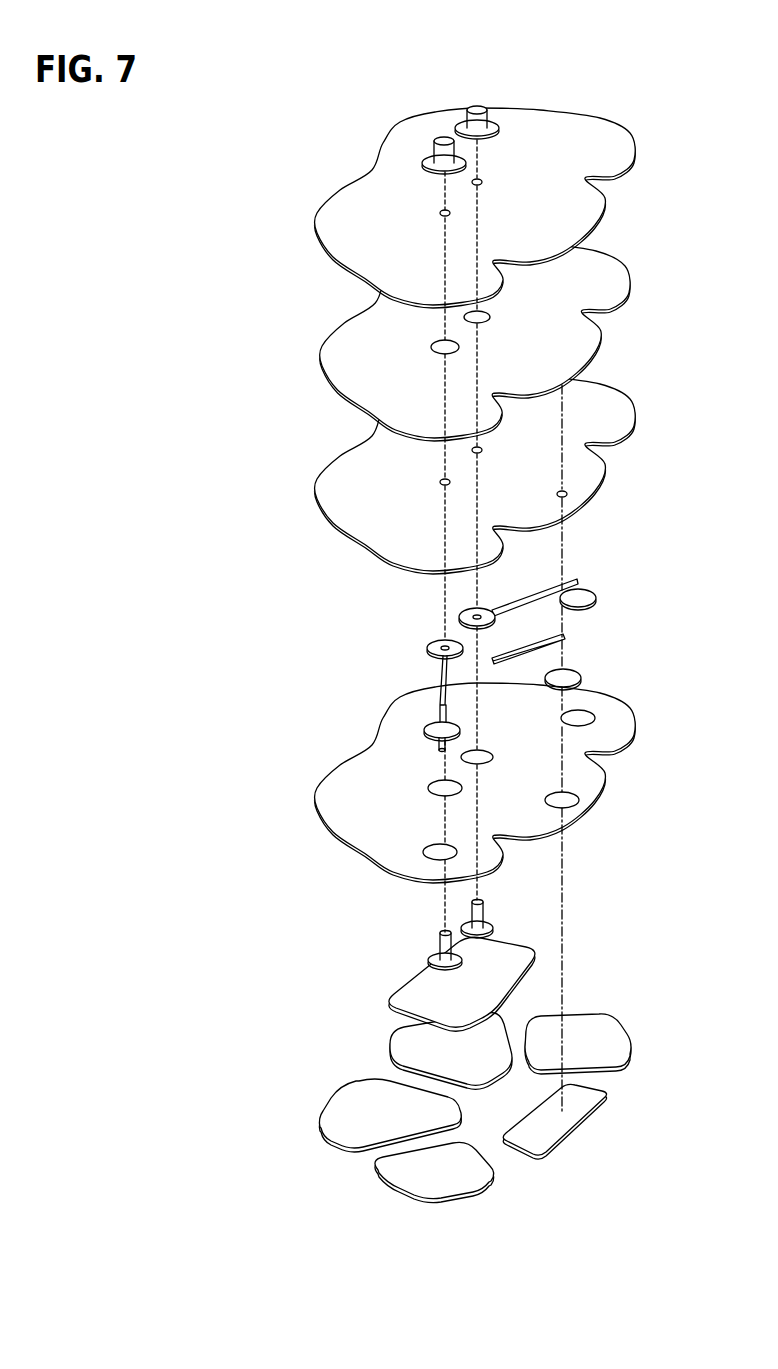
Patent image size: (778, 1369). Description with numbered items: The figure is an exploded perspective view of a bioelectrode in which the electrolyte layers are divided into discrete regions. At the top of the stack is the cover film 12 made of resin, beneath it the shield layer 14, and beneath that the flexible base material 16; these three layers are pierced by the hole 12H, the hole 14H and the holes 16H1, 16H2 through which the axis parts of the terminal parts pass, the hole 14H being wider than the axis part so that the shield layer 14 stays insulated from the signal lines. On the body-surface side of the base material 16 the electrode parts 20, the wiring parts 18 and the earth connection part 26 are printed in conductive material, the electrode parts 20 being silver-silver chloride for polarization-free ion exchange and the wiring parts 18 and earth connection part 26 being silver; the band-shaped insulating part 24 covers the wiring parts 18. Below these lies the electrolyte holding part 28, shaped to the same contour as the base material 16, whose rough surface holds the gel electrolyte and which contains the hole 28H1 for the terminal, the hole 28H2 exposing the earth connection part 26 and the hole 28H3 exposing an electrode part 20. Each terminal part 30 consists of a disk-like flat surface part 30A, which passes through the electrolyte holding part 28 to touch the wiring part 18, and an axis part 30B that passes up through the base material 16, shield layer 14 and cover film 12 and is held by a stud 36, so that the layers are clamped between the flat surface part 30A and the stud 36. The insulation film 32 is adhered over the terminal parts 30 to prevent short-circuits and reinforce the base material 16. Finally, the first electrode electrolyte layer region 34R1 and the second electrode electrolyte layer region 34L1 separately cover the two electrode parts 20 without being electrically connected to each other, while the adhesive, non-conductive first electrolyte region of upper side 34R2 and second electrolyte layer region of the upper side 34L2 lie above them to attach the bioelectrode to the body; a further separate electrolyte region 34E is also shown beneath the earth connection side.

The cover film 12 is at (463, 207).
The hole provided to the cover film 12H is at (446, 218).
The shield layer 14 is at (466, 341).
The hole provided to the shield layer 14H is at (438, 344).
The base material 16 is at (477, 470).
The hole provided to the base material 16H1 is at (440, 481).
The hole provided to the base material 16H2 is at (577, 486).
The wiring part 18 is at (538, 592).
The electrode part 20 is at (600, 598).
The insulating part 24 is at (548, 633).
The earth connection part 26 is at (582, 675).
The electrolyte holding part 28 is at (490, 783).
The hole formed to the electrolyte holding part 28H1 is at (432, 782).
The hole for exposure of the earth connection part 28H2 is at (572, 794).
The hole for exposure of the electrode part 28H3 is at (425, 850).
The terminal part 30 is at (541, 920).
The flat surface part 30A is at (495, 926).
The axis part 30B is at (490, 912).
The insulation film 32 is at (530, 958).
The second electrode electrolyte layer region 34L1 is at (605, 1025).
The second electrolyte layer region of the upper side 34L2 is at (404, 1028).
The first electrode electrolyte layer region 34R1 is at (388, 1170).
The first electrolyte region of upper side 34R2 is at (335, 1108).
The end pad 34E is at (583, 1112).
The stud 36 is at (425, 138).